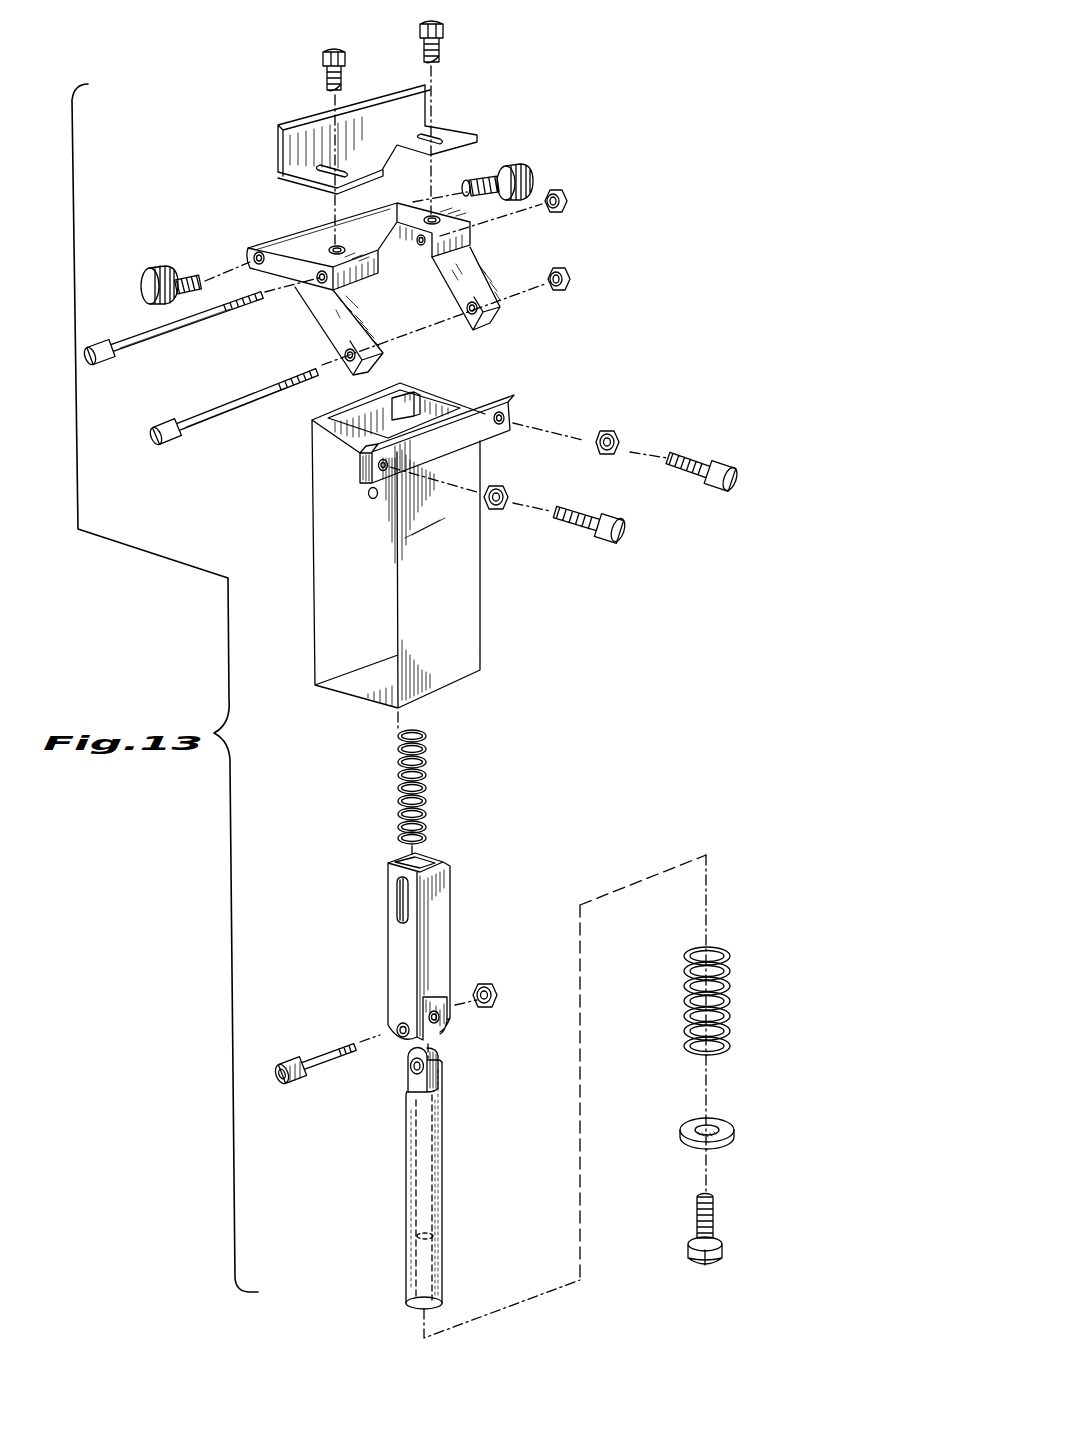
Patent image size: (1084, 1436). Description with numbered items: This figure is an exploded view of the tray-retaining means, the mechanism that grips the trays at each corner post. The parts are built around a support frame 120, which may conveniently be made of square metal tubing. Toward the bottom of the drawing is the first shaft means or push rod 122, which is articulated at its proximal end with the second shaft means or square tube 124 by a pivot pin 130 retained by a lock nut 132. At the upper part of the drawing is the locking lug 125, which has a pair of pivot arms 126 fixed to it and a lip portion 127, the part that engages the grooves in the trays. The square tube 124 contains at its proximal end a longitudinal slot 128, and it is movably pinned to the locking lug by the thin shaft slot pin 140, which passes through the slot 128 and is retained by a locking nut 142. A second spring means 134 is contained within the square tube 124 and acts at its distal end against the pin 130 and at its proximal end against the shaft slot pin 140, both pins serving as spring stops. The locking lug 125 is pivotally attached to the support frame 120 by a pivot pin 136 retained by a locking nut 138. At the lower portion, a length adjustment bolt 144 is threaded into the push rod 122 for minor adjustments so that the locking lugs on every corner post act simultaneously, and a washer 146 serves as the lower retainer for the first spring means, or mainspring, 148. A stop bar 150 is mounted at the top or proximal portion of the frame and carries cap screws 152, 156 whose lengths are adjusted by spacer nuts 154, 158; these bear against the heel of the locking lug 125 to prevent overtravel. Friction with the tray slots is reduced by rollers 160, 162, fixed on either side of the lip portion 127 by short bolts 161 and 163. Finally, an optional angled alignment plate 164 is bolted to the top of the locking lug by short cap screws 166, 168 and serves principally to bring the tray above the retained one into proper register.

The support frame 120 is at (468, 600).
The push rod 122 is at (432, 1144).
The square tube 124 is at (443, 914).
The locking lug 125 is at (293, 272).
The pivot arms 126 is at (350, 322).
The lip portion 127 is at (290, 244).
The longitudinal slot 128 is at (396, 900).
The pivot pin 130 is at (318, 1076).
The lock nut 132 is at (490, 1007).
The second spring means 134 is at (428, 774).
The pivot pin 136 is at (199, 434).
The locking nut 138 is at (570, 288).
The shaft slot pin 140 is at (139, 348).
The locking nut 142 is at (572, 208).
The length adjustment bolt 144 is at (722, 1242).
The washer 146 is at (726, 1132).
The first spring means (mainspring) 148 is at (724, 1018).
The stop bar 150 is at (500, 404).
The cap screw 152 is at (622, 527).
The spacer nut 154 is at (504, 484).
The cap screw 156 is at (732, 478).
The spacer nut 158 is at (612, 436).
The roller 160 is at (160, 268).
The short bolt 161 is at (187, 266).
The roller 162 is at (531, 168).
The short bolt 163 is at (484, 178).
The angled alignment plate 164 is at (432, 104).
The short cap screw 166 is at (333, 50).
The short cap screw 168 is at (445, 22).